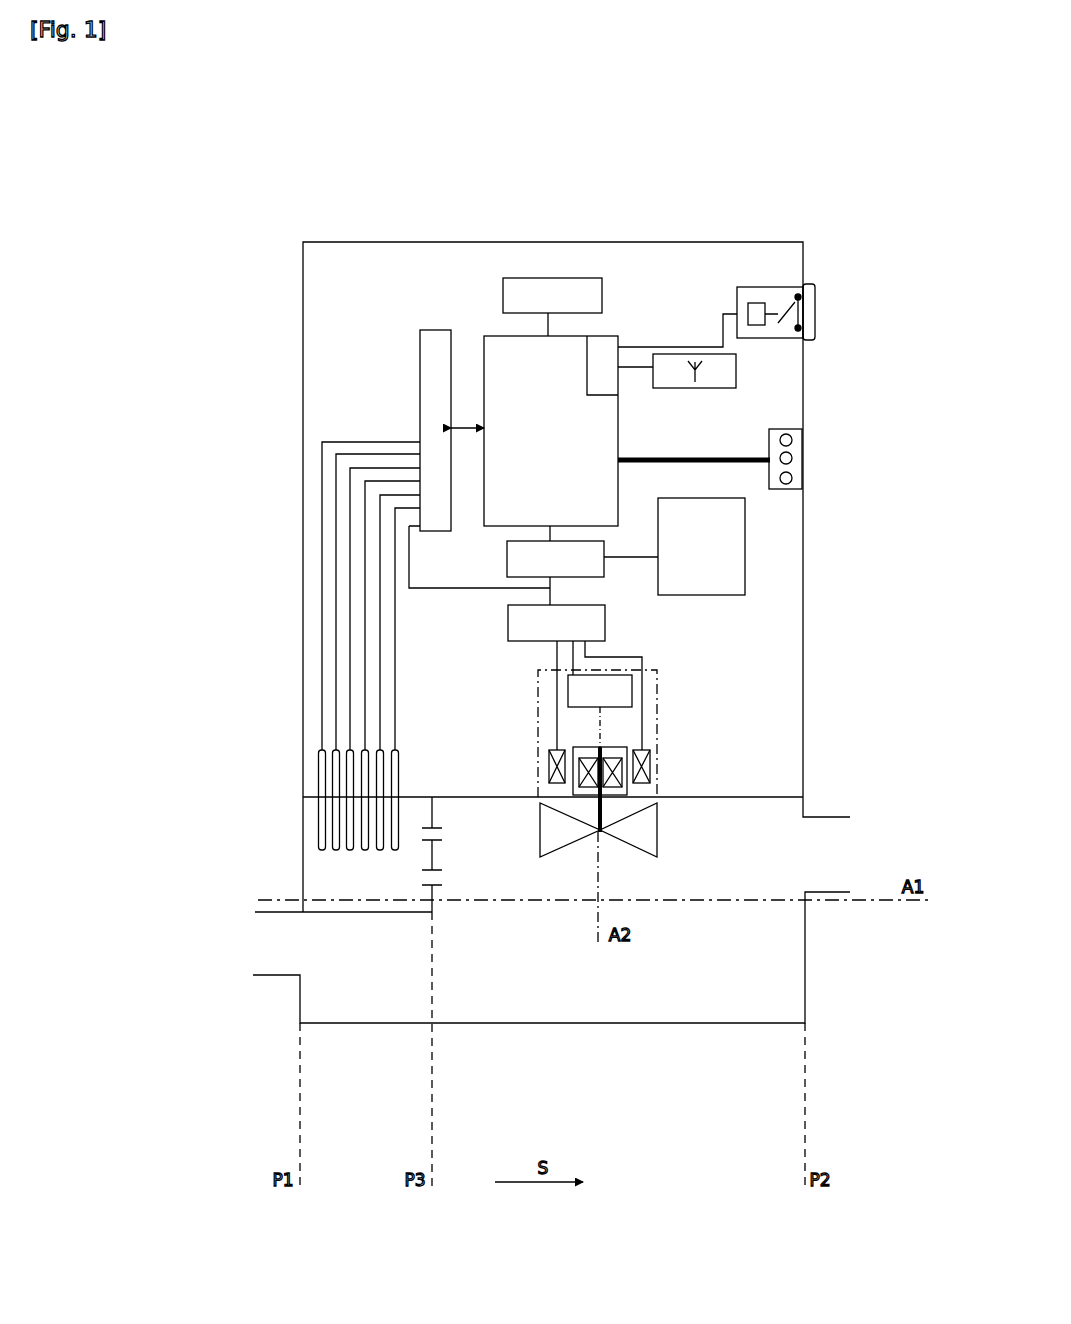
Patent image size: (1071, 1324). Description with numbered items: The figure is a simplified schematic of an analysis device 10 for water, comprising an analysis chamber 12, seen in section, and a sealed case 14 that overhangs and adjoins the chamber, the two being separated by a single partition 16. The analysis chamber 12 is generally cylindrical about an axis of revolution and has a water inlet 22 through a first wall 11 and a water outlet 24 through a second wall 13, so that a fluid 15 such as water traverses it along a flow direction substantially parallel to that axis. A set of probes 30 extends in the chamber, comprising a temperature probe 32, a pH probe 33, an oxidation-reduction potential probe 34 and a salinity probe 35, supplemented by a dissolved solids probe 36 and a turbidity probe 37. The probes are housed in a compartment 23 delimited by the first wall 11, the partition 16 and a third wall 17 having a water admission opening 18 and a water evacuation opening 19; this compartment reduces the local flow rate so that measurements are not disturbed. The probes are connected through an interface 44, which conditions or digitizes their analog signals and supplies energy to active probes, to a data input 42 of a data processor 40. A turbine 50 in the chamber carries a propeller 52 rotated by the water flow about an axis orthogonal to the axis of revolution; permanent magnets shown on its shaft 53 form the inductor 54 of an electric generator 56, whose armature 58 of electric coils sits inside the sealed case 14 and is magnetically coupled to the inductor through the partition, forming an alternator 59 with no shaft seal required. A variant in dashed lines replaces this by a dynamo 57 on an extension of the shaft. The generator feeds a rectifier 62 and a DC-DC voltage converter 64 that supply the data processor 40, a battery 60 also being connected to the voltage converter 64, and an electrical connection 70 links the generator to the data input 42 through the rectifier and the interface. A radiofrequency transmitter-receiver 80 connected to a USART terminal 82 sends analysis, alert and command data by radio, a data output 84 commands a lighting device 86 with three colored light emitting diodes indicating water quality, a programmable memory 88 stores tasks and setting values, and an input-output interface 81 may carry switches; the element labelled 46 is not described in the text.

The analysis device 10 is at (375, 1083).
The first wall 11 is at (303, 875).
The analysis chamber 12 is at (532, 988).
The second wall 13 is at (806, 968).
The sealed case 14 is at (412, 240).
The fluid 15 is at (590, 988).
The partition 16 is at (540, 796).
The third wall 17 is at (437, 812).
The water admission opening 18 is at (437, 840).
The water evacuation opening 19 is at (437, 870).
The water inlet 22 is at (283, 947).
The compartment 23 is at (372, 892).
The water outlet 24 is at (835, 860).
The set of probes 30 is at (308, 830).
The temperature probe 32 is at (393, 750).
The pH probe 33 is at (378, 750).
The oxidation-reduction potential probe 34 is at (363, 750).
The salinity probe 35 is at (348, 750).
The dissolved solids probe 36 is at (333, 750).
The turbidity probe 37 is at (318, 750).
The data processor 40 is at (580, 447).
The data input 42 is at (475, 432).
The interface 44 is at (432, 340).
The power connection 46 is at (548, 535).
The turbine 50 is at (578, 870).
The propeller 52 is at (595, 835).
The shaft 53 is at (640, 850).
The inductor 54 is at (690, 800).
The electric generator 56 is at (650, 770).
The dynamo 57 is at (632, 690).
The armature 58 is at (650, 750).
The alternator 59 is at (742, 752).
The battery 60 is at (705, 512).
The rectifier 62 is at (588, 627).
The DC-DC voltage converter 64 is at (575, 570).
The electrical connection 70 is at (503, 590).
The radiofrequency transmitter-receiver 80 is at (718, 376).
The input-output interface 81 is at (738, 338).
The USART terminal 82 is at (612, 345).
The data output 84 is at (618, 468).
The lighting device 86 is at (770, 437).
The programmable memory 88 is at (600, 290).